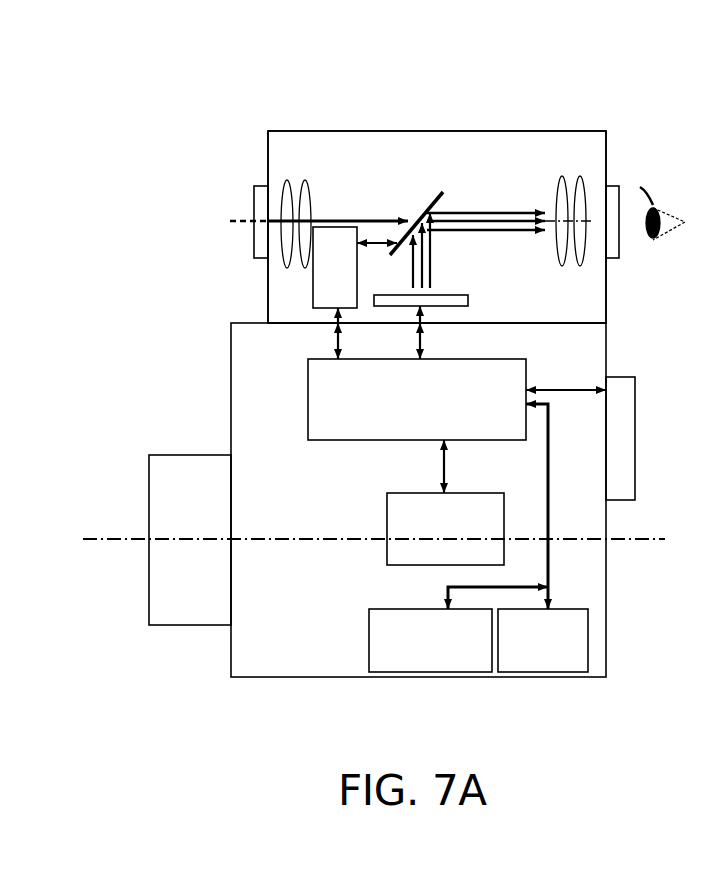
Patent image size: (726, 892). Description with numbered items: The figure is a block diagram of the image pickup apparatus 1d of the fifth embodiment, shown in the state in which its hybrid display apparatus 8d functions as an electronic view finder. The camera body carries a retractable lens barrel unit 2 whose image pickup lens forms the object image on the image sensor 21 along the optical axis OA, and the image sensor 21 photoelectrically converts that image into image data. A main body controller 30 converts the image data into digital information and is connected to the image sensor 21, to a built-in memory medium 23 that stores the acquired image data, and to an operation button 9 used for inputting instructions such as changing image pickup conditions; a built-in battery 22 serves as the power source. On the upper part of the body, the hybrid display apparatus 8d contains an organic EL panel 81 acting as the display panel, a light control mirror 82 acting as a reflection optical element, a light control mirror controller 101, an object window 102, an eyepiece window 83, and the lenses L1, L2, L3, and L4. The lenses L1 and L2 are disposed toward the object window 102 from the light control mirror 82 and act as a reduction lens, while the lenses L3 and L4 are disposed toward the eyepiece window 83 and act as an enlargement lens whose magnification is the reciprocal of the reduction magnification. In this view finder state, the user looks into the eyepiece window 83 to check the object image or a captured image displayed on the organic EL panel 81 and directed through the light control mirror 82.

The image pickup apparatus 1d is at (696, 78).
The lens barrel unit 2 is at (147, 563).
The optical axis OA is at (98, 545).
The hybrid display apparatus 8d is at (484, 131).
The operation button 9 is at (635, 450).
The image sensor 21 is at (417, 565).
The built-in battery 22 is at (567, 672).
The built-in memory medium 23 is at (467, 672).
The main body controller 30 is at (457, 408).
The organic EL panel 81 is at (514, 336).
The light control mirror 82 is at (432, 197).
The eyepiece window 83 is at (615, 250).
The light control mirror controller 101 is at (267, 275).
The object window 102 is at (258, 248).
The lens L1 is at (286, 197).
The lens L2 is at (305, 180).
The lens L3 is at (563, 183).
The lens L4 is at (582, 185).